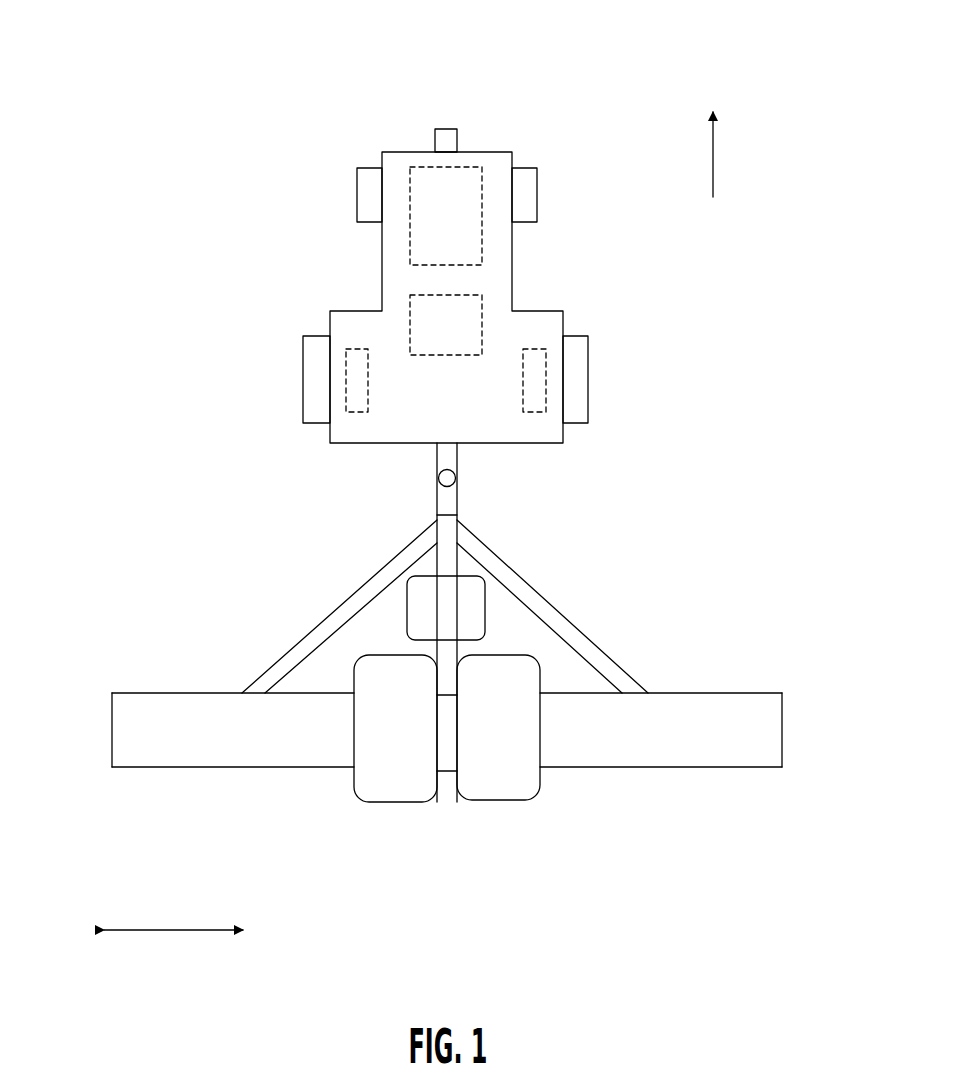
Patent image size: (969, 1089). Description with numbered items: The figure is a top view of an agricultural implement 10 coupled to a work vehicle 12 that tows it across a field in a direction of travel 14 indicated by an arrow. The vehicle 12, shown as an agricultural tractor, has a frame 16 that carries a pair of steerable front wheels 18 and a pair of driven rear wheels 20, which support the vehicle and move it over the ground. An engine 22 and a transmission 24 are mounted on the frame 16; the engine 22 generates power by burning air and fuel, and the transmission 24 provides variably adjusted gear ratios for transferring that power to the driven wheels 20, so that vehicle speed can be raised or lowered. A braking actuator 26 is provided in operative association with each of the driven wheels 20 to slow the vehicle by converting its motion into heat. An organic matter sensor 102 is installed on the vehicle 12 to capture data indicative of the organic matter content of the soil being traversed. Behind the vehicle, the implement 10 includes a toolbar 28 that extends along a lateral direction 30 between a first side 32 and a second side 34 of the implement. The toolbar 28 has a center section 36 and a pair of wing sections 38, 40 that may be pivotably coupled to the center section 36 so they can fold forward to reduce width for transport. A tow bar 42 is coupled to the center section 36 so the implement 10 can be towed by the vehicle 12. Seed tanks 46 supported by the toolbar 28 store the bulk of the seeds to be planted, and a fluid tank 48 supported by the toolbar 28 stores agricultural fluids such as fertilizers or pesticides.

The agricultural implement 10 is at (273, 543).
The work vehicle 12 is at (188, 192).
The direction of travel 14 is at (713, 160).
The frame 16 is at (382, 265).
The steerable front wheels 18 is at (357, 195).
The driven rear wheels 20 is at (303, 381).
The engine 22 is at (436, 160).
The transmission 24 is at (483, 306).
The braking actuator 26 is at (357, 349).
The toolbar 28 is at (302, 772).
The lateral direction 30 is at (177, 930).
The first side 32 is at (92, 742).
The second side 34 is at (806, 742).
The center section 36 is at (457, 562).
The wing section 38 is at (175, 767).
The wing section 40 is at (632, 767).
The tow bar 42 is at (437, 507).
The seed tanks 46 is at (398, 802).
The fluid tank 48 is at (485, 612).
The organic matter sensor 102 is at (450, 128).